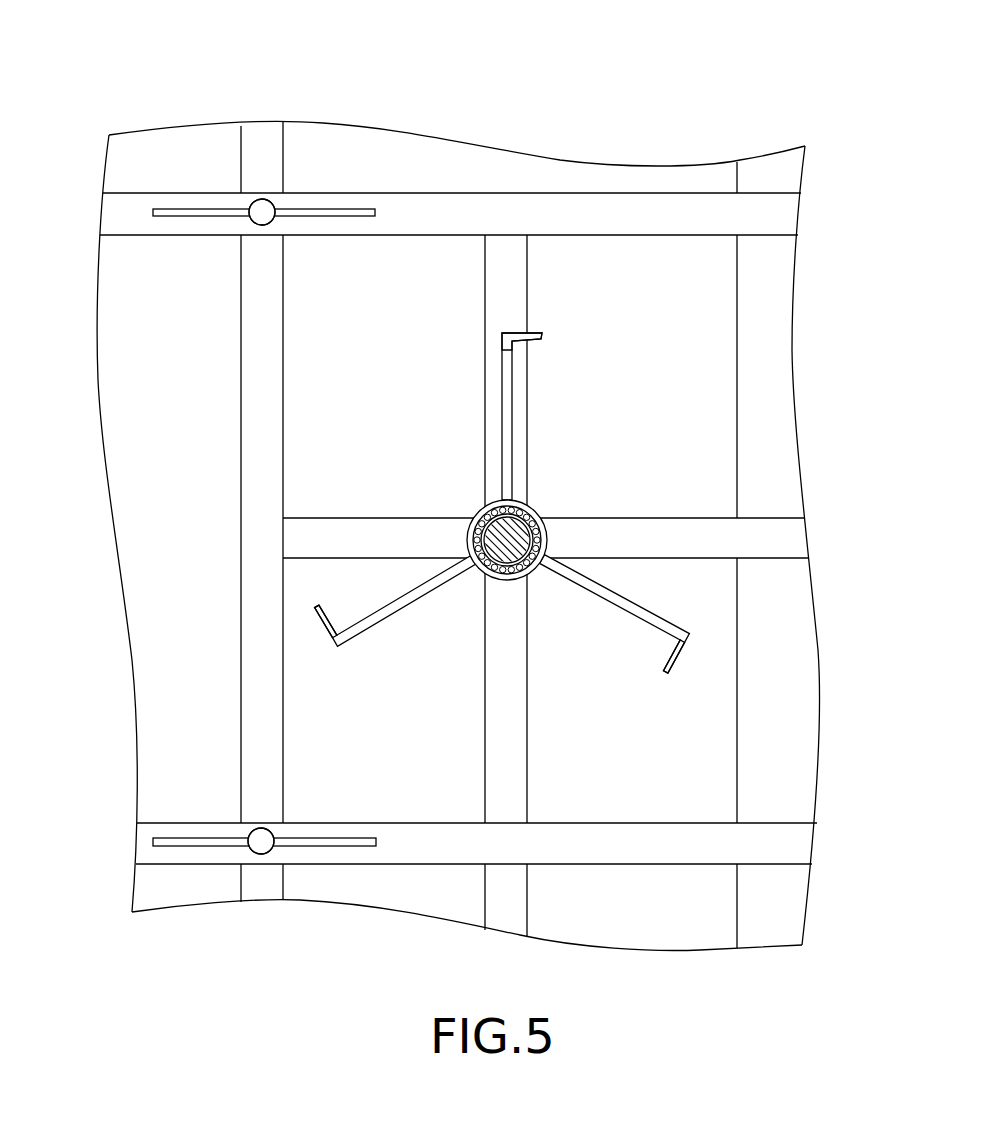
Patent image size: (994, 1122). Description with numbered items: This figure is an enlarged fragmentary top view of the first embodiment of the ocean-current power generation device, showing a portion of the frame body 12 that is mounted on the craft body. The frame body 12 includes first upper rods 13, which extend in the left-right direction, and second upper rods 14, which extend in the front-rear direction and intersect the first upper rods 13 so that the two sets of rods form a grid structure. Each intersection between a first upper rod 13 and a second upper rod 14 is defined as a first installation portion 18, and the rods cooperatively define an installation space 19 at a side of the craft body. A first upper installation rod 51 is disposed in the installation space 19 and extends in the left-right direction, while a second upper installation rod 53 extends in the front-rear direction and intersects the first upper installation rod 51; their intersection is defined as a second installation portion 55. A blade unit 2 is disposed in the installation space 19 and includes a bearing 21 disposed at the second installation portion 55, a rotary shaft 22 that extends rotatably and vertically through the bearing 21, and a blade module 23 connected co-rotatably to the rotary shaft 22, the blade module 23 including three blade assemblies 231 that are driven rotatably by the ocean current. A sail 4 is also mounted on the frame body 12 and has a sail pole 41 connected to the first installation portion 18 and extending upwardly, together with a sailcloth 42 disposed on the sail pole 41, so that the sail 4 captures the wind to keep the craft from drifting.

The blade unit 2 is at (473, 541).
The sail 4 is at (298, 427).
The frame body 12 is at (345, 125).
The first upper rod 13 is at (662, 212).
The second upper rod 14 is at (262, 292).
The first installation portion 18 is at (277, 200).
The installation space 19 is at (560, 257).
The bearing 21 is at (547, 515).
The rotary shaft 22 is at (548, 540).
The blade module 23 is at (537, 500).
The sail pole 41 is at (262, 210).
The sailcloth 42 is at (178, 213).
The first upper installation rod 51 is at (712, 540).
The second upper installation rod 53 is at (512, 758).
The second installation portion 55 is at (513, 539).
The blade assembly 231 is at (520, 367).